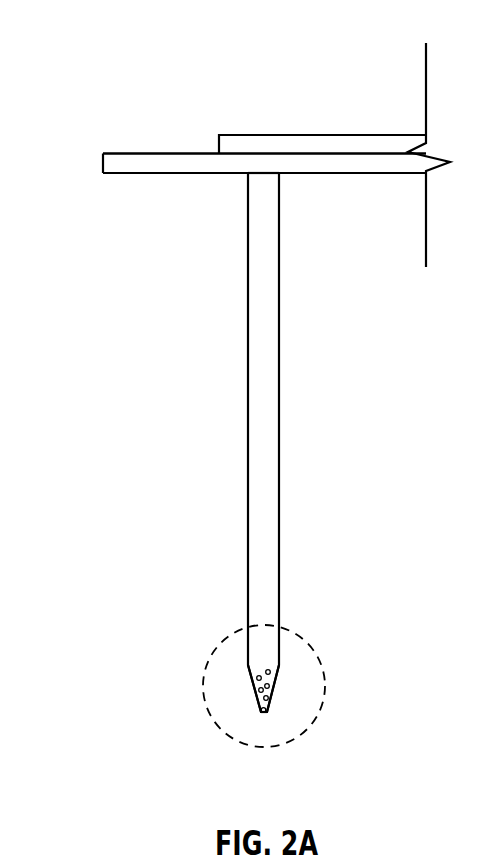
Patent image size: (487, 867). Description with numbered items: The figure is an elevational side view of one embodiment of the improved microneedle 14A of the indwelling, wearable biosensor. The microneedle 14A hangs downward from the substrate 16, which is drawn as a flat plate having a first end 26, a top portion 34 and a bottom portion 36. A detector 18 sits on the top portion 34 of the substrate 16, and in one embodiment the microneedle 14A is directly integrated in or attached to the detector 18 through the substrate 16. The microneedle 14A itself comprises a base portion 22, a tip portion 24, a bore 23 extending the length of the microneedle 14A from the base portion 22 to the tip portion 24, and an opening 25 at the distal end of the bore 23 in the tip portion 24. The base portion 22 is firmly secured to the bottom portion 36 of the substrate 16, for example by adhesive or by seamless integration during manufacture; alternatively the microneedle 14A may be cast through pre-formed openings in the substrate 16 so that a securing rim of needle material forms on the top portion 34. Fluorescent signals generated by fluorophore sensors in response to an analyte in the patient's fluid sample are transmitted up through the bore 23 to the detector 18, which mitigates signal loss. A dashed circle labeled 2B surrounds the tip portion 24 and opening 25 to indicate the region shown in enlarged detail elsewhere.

The substrate 16 is at (138, 48).
The detector 18 is at (313, 145).
The base portion 22 is at (280, 174).
The bore 23 is at (262, 502).
The tip portion 24 is at (252, 685).
The opening 25 is at (265, 714).
The first end 26 is at (103, 163).
The top portion 34 is at (165, 153).
The bottom portion 36 is at (166, 174).
The microneedle 14A is at (247, 452).
The detail view circle for FIG. 2B is at (312, 646).